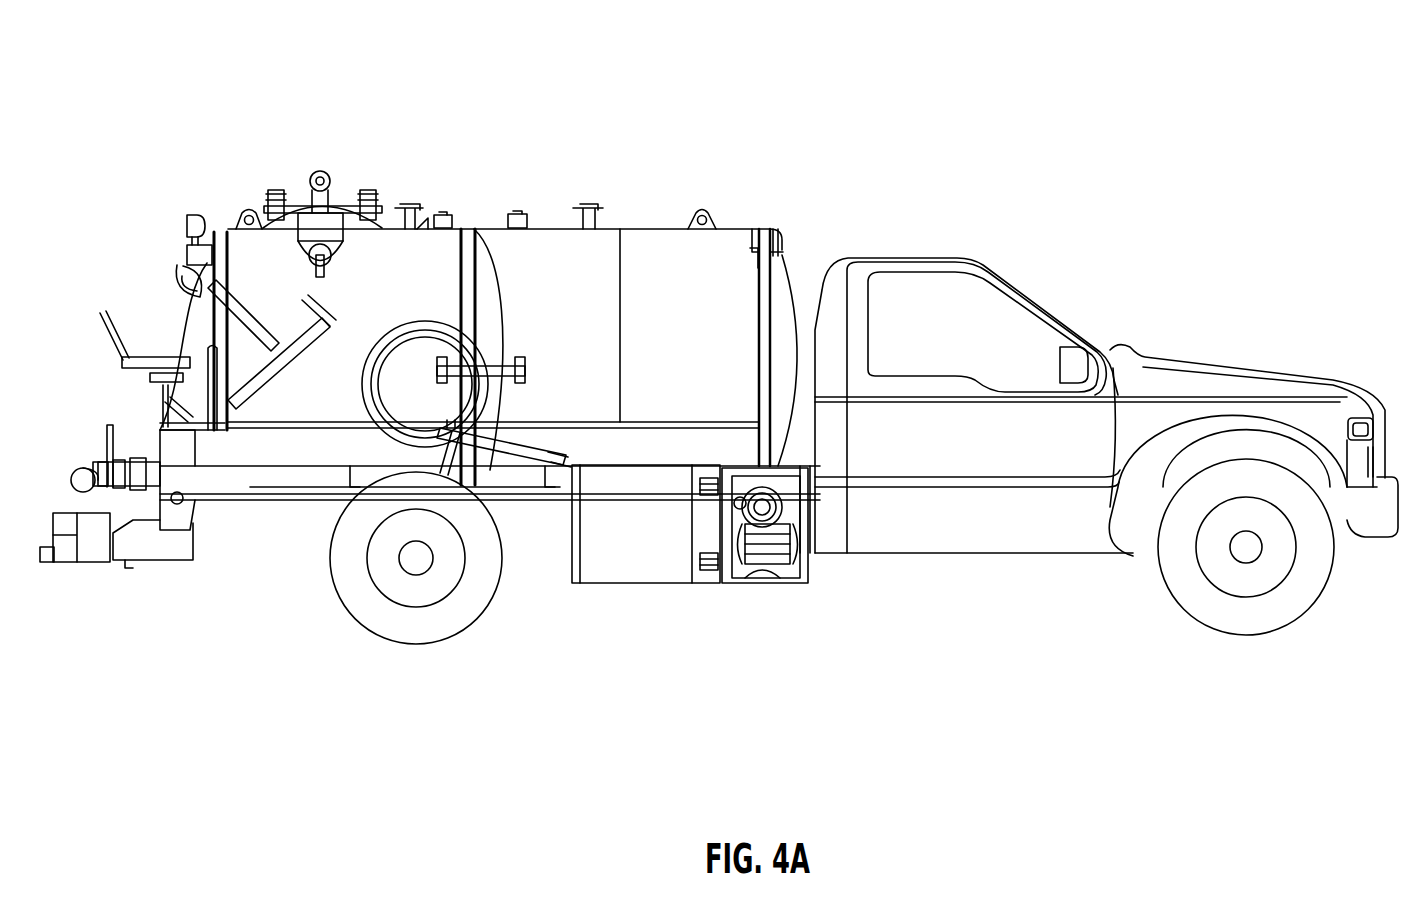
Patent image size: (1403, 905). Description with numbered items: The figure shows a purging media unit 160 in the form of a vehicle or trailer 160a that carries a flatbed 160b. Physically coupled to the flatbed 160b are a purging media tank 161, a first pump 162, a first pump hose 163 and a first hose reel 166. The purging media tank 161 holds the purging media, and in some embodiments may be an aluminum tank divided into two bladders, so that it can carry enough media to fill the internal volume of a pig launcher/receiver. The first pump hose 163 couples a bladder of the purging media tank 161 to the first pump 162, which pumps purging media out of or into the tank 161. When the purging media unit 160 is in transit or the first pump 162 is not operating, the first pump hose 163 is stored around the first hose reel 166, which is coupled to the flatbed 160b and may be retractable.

The purging media unit 160 is at (143, 53).
The vehicle or trailer 160a is at (703, 445).
The flatbed 160b is at (220, 450).
The purging media tank 161 is at (707, 272).
The first pump 162 is at (745, 565).
The first pump hose 163 is at (380, 343).
The first hose reel 166 is at (447, 330).